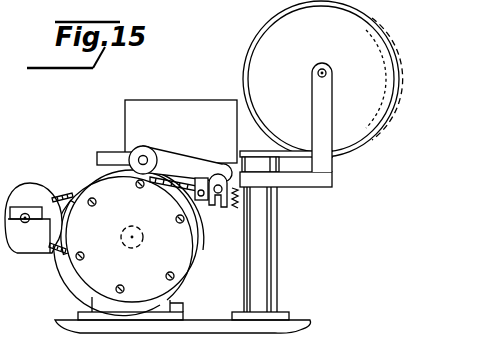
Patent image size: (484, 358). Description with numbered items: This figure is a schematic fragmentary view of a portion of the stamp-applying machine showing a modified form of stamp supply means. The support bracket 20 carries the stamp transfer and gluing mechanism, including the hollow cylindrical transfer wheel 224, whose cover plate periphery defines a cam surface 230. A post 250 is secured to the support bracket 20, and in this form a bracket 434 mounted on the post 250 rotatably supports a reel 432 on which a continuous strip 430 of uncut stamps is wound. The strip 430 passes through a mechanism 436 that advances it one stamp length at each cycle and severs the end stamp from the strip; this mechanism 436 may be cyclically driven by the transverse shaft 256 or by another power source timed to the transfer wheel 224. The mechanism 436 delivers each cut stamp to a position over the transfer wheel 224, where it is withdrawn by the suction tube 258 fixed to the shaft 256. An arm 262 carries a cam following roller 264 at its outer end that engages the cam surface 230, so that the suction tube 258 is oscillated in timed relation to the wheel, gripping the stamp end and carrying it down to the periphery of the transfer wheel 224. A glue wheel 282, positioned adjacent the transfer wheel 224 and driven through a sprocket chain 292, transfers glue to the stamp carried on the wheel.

The support bracket 20 is at (297, 321).
The transfer wheel 224 is at (82, 288).
The cam surface 230 is at (170, 297).
The post 250 is at (275, 242).
The transverse shaft 256 is at (221, 186).
The suction tube 258 is at (187, 183).
The arm 262 is at (172, 160).
The cam following roller 264 is at (142, 147).
The glue wheel 282 is at (25, 183).
The sprocket chain 292 is at (65, 192).
The continuous strip 430 is at (280, 152).
The reel 432 is at (380, 47).
The bracket 434 is at (324, 163).
The strip advancing and cutting mechanism 436 is at (205, 83).